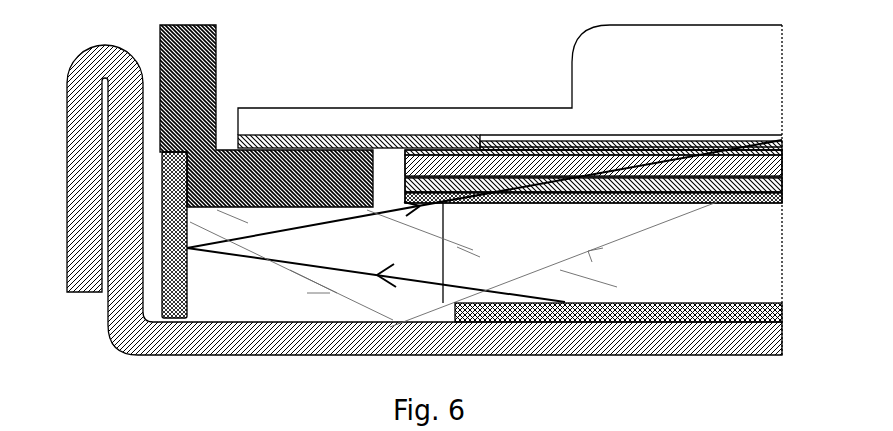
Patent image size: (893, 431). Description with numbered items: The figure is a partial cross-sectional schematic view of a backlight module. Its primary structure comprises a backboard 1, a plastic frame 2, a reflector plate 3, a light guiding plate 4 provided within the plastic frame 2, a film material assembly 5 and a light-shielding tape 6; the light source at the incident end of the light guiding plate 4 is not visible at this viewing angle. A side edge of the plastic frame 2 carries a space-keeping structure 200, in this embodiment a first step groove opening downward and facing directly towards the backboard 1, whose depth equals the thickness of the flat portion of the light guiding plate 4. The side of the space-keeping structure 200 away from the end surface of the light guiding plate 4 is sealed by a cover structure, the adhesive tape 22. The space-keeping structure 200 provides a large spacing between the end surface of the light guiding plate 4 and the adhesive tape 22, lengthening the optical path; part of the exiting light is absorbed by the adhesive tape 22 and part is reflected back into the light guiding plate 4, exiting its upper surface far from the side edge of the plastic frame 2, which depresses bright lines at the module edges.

The backboard 1 is at (773, 348).
The plastic frame 2 is at (187, 47).
The adhesive tape 22 is at (168, 192).
The light-shielding tape 6 is at (255, 140).
The film material assembly 5 is at (770, 184).
The light guiding plate 4 is at (772, 257).
The reflector plate 3 is at (773, 315).
The space-keeping structure 200 is at (240, 300).